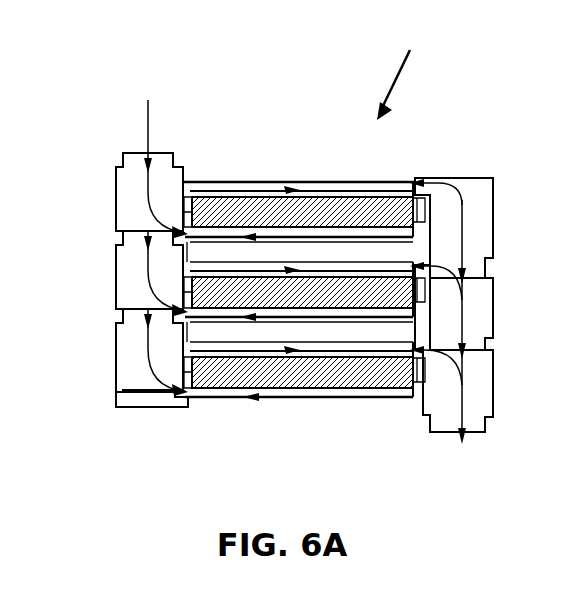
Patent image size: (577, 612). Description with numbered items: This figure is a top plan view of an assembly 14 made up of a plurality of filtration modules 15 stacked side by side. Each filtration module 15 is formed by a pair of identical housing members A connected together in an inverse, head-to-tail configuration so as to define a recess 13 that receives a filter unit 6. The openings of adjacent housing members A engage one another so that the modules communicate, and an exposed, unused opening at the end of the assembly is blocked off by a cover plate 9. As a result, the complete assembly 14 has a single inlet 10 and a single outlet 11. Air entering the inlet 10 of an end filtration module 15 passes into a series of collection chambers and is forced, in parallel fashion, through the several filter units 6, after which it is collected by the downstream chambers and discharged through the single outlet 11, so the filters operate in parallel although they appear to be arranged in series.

The assembly 14 is at (410, 69).
The inlet 10 is at (160, 236).
The recess 13 is at (243, 200).
The filter unit 6 is at (343, 377).
The cover plate 9 is at (460, 178).
The filtration module 15 is at (115, 215).
The outlet 11 is at (443, 339).
The housing member A is at (127, 203).